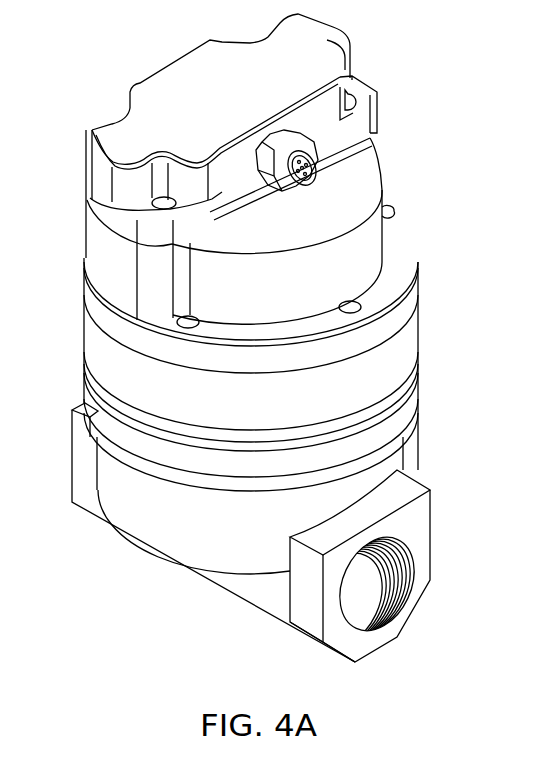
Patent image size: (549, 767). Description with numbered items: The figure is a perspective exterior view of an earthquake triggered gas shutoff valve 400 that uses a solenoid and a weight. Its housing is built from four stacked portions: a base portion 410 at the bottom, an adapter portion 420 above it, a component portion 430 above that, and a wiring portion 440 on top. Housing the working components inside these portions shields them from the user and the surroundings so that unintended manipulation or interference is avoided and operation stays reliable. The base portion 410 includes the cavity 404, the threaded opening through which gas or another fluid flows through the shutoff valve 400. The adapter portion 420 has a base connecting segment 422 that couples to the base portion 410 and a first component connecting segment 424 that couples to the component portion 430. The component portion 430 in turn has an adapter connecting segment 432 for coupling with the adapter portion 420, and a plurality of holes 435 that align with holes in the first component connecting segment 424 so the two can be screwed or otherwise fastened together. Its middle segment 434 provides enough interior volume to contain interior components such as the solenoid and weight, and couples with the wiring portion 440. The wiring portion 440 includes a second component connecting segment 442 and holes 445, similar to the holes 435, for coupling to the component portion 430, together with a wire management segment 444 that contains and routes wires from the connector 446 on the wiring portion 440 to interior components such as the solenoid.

The earthquake triggered gas shutoff valve 400 is at (440, 48).
The cavity 404 is at (353, 588).
The base portion 410 is at (430, 465).
The adapter portion 420 is at (430, 349).
The base connecting segment 422 is at (103, 411).
The first component connecting segment 424 is at (98, 351).
The component portion 430 is at (404, 188).
The adapter connecting segment 432 is at (127, 318).
The middle segment 434 is at (203, 270).
The holes 435 is at (386, 206).
The wiring portion 440 is at (362, 45).
The second component connecting segment 442 is at (108, 211).
The wire management segment 444 is at (123, 188).
The holes 445 is at (165, 201).
The connector 446 is at (282, 150).